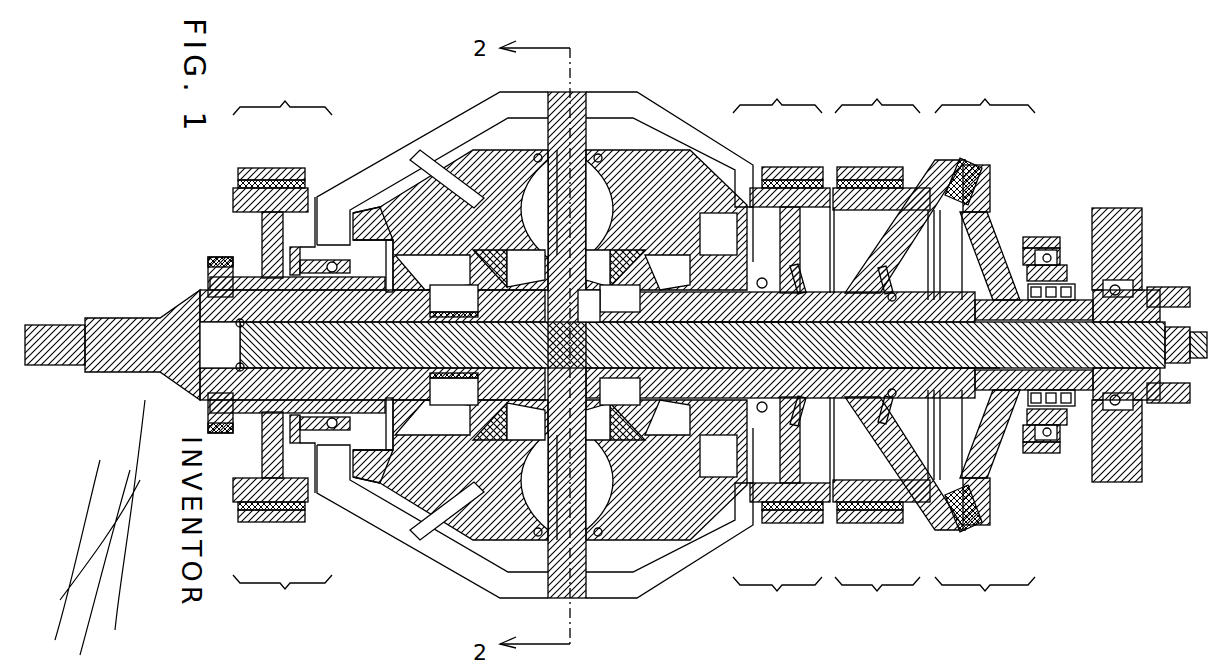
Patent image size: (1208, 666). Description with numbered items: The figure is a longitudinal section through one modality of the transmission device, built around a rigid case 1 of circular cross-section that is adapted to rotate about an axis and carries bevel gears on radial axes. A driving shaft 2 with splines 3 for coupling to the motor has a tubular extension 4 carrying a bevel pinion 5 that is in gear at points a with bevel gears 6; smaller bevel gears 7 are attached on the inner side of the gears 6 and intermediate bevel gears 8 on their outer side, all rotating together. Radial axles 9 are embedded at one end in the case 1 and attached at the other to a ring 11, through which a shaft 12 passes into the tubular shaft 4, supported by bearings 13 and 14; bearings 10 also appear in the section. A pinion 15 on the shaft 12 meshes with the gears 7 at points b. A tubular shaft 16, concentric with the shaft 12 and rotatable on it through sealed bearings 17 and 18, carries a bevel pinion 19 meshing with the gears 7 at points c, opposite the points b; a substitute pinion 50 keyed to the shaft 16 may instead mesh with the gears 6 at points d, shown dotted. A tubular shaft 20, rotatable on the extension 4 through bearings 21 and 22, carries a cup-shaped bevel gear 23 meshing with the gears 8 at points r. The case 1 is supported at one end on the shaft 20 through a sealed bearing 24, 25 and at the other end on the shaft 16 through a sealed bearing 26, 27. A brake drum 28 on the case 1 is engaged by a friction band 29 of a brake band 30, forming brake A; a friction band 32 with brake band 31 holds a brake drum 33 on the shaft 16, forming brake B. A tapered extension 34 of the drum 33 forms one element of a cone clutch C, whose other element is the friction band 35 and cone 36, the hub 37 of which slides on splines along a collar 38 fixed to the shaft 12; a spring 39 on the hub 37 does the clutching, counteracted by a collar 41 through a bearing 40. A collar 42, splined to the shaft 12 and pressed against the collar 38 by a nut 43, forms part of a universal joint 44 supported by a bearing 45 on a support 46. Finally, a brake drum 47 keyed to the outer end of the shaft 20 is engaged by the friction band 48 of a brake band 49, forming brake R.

The rigid case 1 is at (628, 104).
The driving shaft 2 is at (65, 325).
The splines 3 is at (110, 318).
The tubular extension 4 is at (325, 306).
The bevel pinion 5 is at (360, 322).
The bevel gears 6 is at (426, 262).
The bevel gears of lesser diameter 7 is at (567, 345).
The bevel gears of intermediate diameter 8 is at (470, 175).
The radial axles 9 is at (552, 222).
The ball bearing 10 is at (602, 158).
The ring 11 is at (588, 306).
The shaft 12 is at (563, 345).
The bearing 13 is at (243, 328).
The bearing 14 is at (454, 345).
The pinion 15 is at (482, 296).
The tubular shaft 16 is at (810, 302).
The sealed bearing 17 is at (619, 345).
The sealed bearing 18 is at (886, 288).
The bevel pinion 19 is at (650, 296).
The tubular shaft 20 is at (268, 275).
The bearing 21 is at (230, 262).
The bearing 22 is at (392, 345).
The cup-shaped bevel gear 23 is at (440, 172).
The sealed bearing 24 is at (332, 262).
The sealed bearing 25 is at (300, 262).
The sealed bearing 26 is at (762, 278).
The sealed bearing 27 is at (802, 278).
The brake drum 28 is at (765, 167).
The friction band 29 is at (776, 180).
The brake band 30 is at (796, 188).
The brake band 31 is at (851, 167).
The brake friction band 32 is at (872, 180).
The brake drum 33 is at (885, 188).
The tapered extension 34 is at (943, 162).
The friction band 35 is at (972, 160).
The cone 36 is at (985, 170).
The hub 37 is at (998, 272).
The collar 38 is at (1005, 305).
The spring 39 is at (1062, 286).
The bearing 40 is at (1058, 255).
The collar 41 is at (1045, 238).
The collar 42 is at (1135, 292).
The nut 43 is at (1180, 366).
The universal joint 44 is at (1172, 287).
The bearing 45 is at (1115, 284).
The support 46 is at (1125, 230).
The brake drum 47 is at (252, 168).
The friction band 48 is at (278, 180).
The brake band 49 is at (300, 188).
The pinion 50 is at (735, 300).
The gearing points a is at (432, 345).
The gearing points b is at (454, 343).
The gearing points c is at (667, 345).
The gearing points d is at (718, 262).
The gearing points r is at (430, 195).
The brake R is at (282, 347).
The brake A is at (777, 348).
The brake B is at (877, 348).
The cone clutch C is at (985, 348).